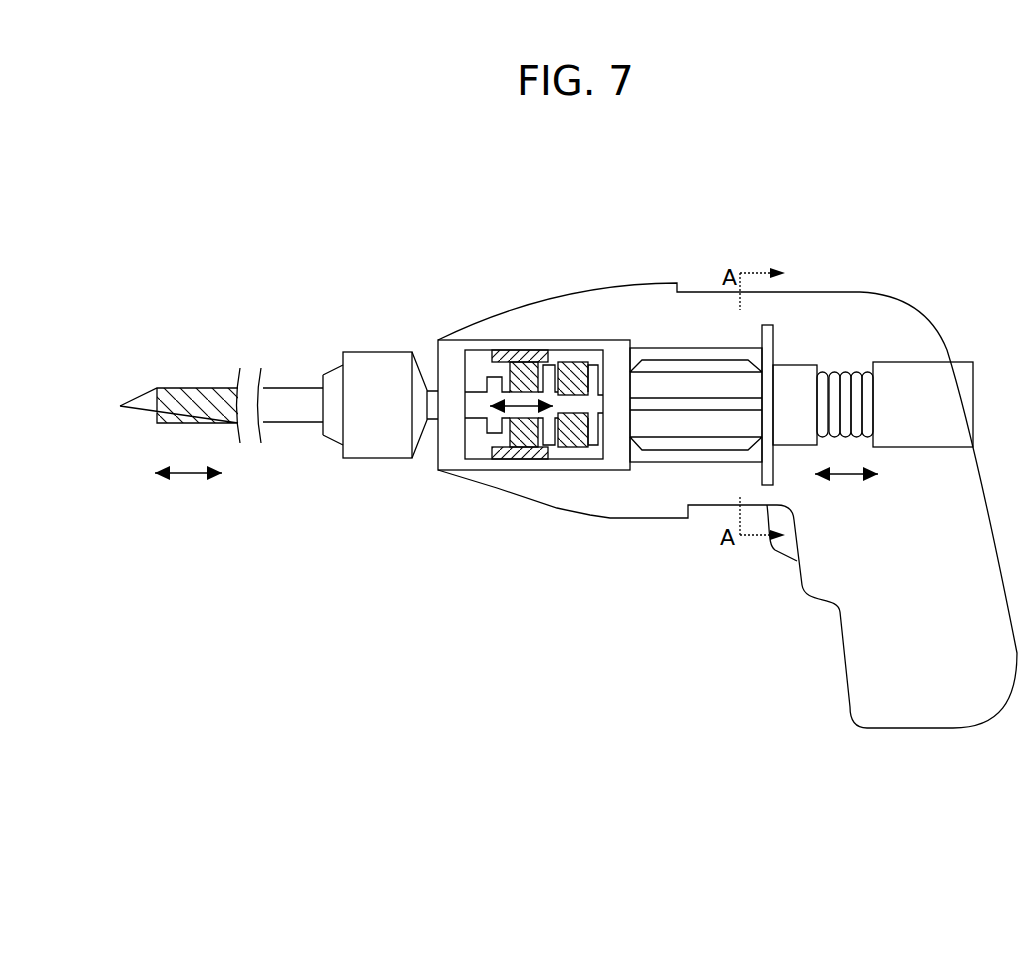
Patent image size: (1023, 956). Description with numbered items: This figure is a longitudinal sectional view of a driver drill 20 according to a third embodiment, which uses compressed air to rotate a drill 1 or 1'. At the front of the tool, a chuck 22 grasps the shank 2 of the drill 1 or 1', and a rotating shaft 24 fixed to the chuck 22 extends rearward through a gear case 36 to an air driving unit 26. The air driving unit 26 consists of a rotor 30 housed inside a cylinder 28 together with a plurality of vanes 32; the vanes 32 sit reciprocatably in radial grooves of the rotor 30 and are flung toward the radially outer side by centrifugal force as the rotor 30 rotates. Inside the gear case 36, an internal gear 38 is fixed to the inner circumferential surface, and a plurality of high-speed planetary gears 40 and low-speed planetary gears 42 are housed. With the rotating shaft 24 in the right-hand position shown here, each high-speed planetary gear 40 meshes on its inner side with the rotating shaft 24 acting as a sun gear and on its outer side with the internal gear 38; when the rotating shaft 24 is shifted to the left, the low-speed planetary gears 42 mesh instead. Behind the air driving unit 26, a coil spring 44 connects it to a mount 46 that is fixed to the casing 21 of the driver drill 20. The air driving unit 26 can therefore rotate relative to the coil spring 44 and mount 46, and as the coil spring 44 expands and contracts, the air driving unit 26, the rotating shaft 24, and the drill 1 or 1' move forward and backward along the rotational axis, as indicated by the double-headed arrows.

The drill 1 is at (190, 382).
The drill 1' is at (190, 382).
The shank 2 is at (294, 388).
The driver drill 20 is at (520, 240).
The casing 21 is at (847, 292).
The chuck 22 is at (378, 352).
The rotating shaft 24 is at (480, 377).
The air driving unit 26 is at (697, 322).
The cylinder 28 is at (655, 348).
The rotor 30 is at (652, 428).
The vanes 32 is at (698, 445).
The gear case 36 is at (625, 340).
The internal gear 38 is at (517, 362).
The high-speed planetary gears 40 is at (520, 459).
The low-speed planetary gears 42 is at (577, 362).
The coil spring 44 is at (843, 372).
The mount 46 is at (924, 362).